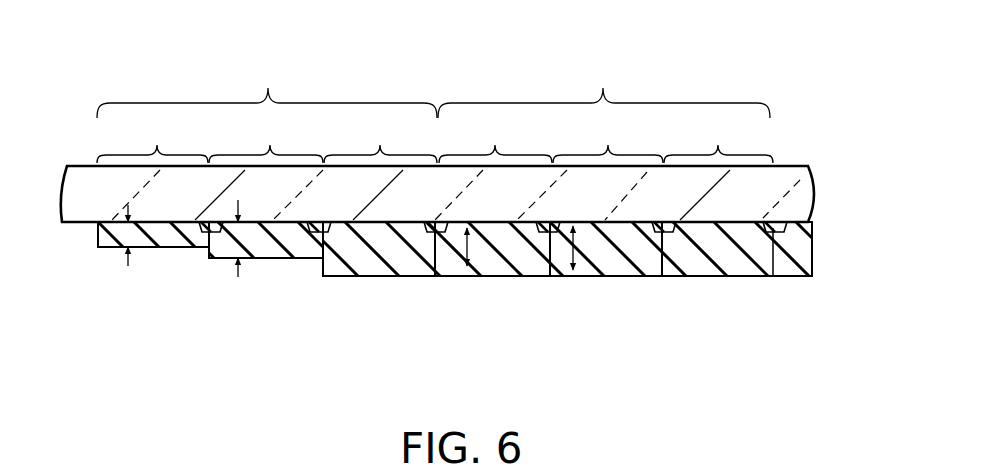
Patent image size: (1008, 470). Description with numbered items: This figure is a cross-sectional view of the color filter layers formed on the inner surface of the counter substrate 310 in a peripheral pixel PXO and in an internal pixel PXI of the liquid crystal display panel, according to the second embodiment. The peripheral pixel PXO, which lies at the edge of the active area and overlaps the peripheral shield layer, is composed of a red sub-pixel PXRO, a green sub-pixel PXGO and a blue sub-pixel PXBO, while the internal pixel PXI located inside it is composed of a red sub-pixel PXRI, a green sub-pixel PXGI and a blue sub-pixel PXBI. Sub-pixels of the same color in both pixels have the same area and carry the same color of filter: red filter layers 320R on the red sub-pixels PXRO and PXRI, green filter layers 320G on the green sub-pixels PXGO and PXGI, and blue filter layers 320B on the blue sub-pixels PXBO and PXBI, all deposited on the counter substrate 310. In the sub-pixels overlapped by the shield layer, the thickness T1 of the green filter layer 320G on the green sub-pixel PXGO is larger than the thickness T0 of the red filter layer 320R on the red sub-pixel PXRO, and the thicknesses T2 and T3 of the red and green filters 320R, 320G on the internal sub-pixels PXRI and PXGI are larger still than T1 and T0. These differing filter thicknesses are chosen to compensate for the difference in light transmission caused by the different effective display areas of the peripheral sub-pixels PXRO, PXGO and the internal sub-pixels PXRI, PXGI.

The counter substrate 310 is at (812, 193).
The red filter layer 320R is at (172, 249).
The green filter layer 320G is at (284, 260).
The blue filter layer 320B is at (376, 278).
The thickness of red filter layer T0 is at (124, 252).
The thickness of green filter layer T1 is at (234, 264).
The thickness of red filter layer on internal red sub-pixel T2 is at (466, 264).
The thickness of green filter layer on internal green sub-pixel T3 is at (572, 262).
The peripheral pixel PXO is at (267, 88).
The internal pixel PXI is at (604, 87).
The red sub-pixel of peripheral pixel PXRO is at (152, 142).
The green sub-pixel of peripheral pixel PXGO is at (266, 142).
The blue sub-pixel of peripheral pixel PXBO is at (380, 142).
The red sub-pixel of internal pixel PXRI is at (495, 142).
The green sub-pixel of internal pixel PXGI is at (608, 142).
The blue sub-pixel of internal pixel PXBI is at (718, 142).